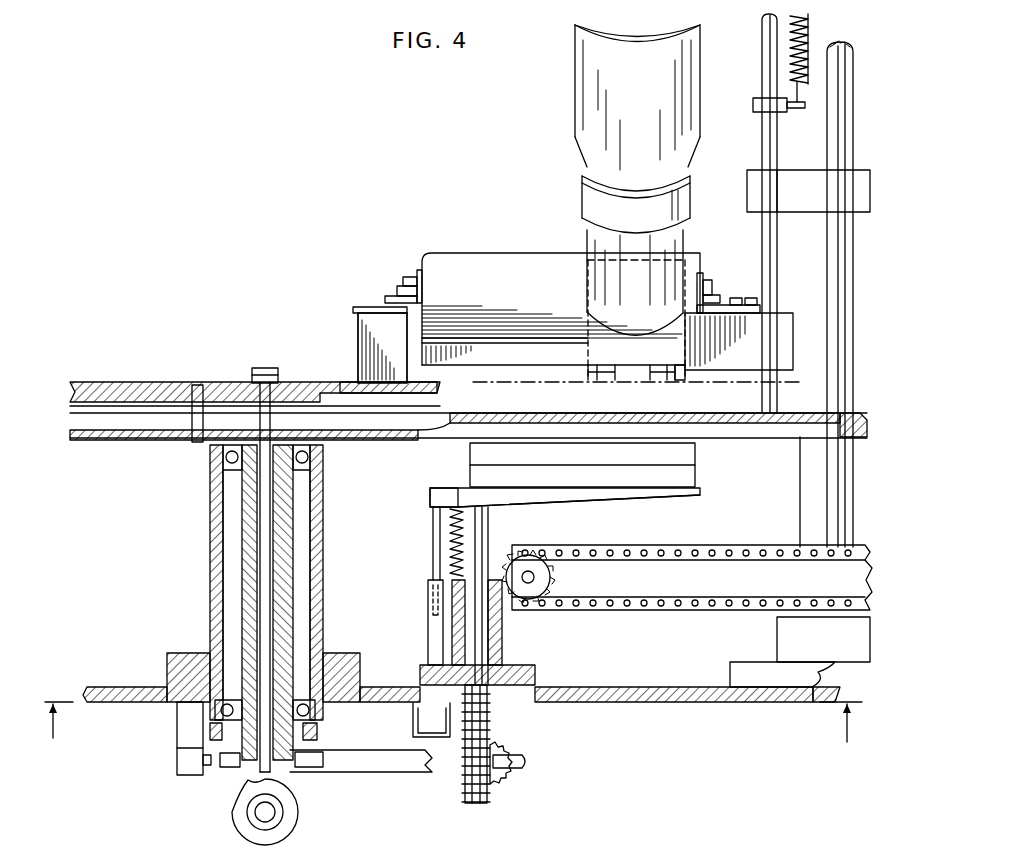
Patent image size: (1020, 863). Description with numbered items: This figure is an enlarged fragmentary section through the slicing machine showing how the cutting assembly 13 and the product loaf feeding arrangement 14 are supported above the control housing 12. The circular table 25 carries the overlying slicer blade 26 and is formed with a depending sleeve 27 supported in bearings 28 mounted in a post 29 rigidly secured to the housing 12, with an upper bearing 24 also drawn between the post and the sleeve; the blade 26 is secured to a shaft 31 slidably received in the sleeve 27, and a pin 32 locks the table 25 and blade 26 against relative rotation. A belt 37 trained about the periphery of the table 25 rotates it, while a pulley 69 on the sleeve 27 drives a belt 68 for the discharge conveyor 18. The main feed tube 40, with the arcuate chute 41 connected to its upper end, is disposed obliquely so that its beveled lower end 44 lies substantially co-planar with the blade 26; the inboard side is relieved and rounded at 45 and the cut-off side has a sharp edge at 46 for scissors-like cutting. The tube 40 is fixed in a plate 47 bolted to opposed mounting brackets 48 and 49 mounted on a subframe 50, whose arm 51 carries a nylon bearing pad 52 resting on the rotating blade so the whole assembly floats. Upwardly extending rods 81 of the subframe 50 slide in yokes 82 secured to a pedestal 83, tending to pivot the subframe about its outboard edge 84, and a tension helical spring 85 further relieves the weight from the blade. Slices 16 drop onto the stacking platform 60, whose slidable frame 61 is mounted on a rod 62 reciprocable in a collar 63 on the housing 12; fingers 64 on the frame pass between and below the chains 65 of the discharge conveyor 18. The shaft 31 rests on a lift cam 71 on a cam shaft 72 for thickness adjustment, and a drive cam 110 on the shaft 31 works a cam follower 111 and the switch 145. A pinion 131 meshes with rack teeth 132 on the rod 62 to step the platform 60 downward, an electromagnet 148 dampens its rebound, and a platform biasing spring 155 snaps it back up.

The control housing 12 is at (120, 685).
The cutting assembly 13 is at (138, 347).
The product loaf feeding arrangement 14 is at (525, 203).
The slices 16 is at (695, 455).
The discharge conveyor 18 is at (712, 545).
The upper bearing 24 is at (212, 455).
The circular table 25 is at (142, 440).
The slicer blade 26 is at (88, 382).
The sleeve 27 is at (242, 510).
The bearings 28 is at (315, 712).
The post 29 is at (210, 588).
The shaft 31 is at (264, 368).
The pin 32 is at (197, 385).
The belt 37 is at (868, 418).
The main feed tube 40 is at (585, 228).
The arcuate chute 41 is at (576, 80).
The lower end 44 is at (656, 378).
The relieved and rounded side 45 is at (590, 376).
The sharp edge 46 is at (688, 376).
The plate 47 is at (561, 301).
The mounting bracket 48 is at (407, 275).
The mounting bracket 49 is at (700, 275).
The subframe 50 is at (356, 312).
The arm 51 is at (358, 342).
The bearing pad 52 is at (360, 383).
The stacking platform 60 is at (605, 505).
The slidable frame 61 is at (440, 497).
The rod 62 is at (484, 540).
The collar 63 is at (502, 646).
The fingers 64 is at (700, 491).
The chains 65 is at (642, 606).
The belt 68 is at (210, 732).
The pulley 69 is at (318, 732).
The lift cam 71 is at (290, 830).
The cam shaft 72 is at (262, 812).
The rods 81 is at (769, 135).
The yokes 82 is at (757, 192).
The pedestal 83 is at (848, 282).
The outboard edge 84 is at (793, 372).
The tension helical spring 85 is at (806, 36).
The drive cam 110 is at (225, 768).
The cam follower 111 is at (310, 768).
The pinion 131 is at (510, 757).
The rack teeth 132 is at (465, 790).
The switch 145 is at (180, 775).
The electromagnet 148 is at (432, 720).
The platform biasing spring 155 is at (455, 540).